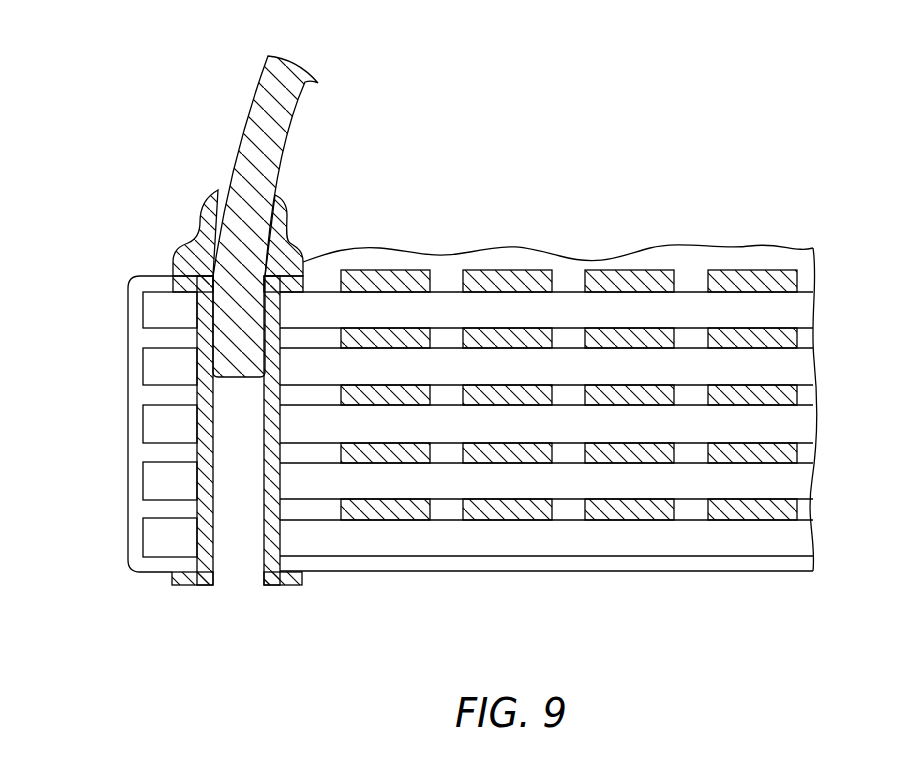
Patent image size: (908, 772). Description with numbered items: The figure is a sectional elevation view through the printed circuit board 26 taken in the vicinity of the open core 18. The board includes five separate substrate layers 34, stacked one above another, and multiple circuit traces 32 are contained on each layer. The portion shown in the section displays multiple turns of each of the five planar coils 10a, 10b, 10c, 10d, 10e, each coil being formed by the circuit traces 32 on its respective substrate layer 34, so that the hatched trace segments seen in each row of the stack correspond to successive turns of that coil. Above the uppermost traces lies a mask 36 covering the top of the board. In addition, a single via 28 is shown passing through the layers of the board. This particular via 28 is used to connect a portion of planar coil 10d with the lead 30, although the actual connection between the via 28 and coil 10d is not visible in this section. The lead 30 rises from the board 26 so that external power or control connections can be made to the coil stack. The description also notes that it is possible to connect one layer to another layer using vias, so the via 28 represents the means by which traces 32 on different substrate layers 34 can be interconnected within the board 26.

The planar coil 10a is at (585, 243).
The planar coil 10b is at (787, 338).
The planar coil 10c is at (795, 398).
The planar coil 10d is at (790, 455).
The planar coil 10e is at (785, 515).
The open core 18 is at (107, 358).
The printed circuit board 26 is at (585, 431).
The via 28 is at (281, 582).
The lead 30 is at (250, 128).
The circuit trace 32 is at (380, 272).
The substrate layer 34 is at (443, 300).
The mask 36 is at (530, 255).